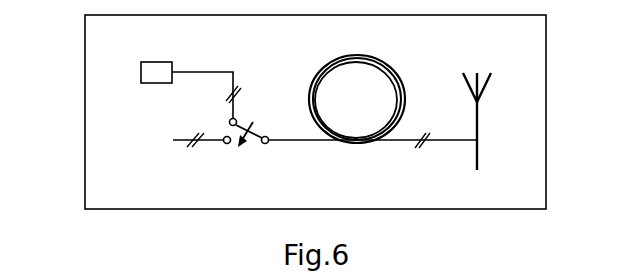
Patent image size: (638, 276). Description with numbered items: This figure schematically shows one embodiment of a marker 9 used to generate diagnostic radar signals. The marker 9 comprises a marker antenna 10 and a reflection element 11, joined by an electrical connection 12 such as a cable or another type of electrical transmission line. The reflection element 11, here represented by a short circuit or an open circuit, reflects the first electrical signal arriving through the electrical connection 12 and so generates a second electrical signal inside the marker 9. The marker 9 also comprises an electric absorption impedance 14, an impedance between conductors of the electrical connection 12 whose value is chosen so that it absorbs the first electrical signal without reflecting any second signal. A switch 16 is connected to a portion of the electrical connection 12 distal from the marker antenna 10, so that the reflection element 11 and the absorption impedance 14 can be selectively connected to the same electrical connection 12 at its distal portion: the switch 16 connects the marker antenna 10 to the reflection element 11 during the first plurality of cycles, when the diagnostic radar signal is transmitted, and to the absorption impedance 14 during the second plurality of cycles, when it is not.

The marker 9 is at (82, 175).
The marker antenna 10 is at (477, 153).
The reflection element 11 is at (147, 136).
The electrical connection 12 is at (348, 142).
The electric absorption impedance 14 is at (158, 62).
The switch 16 is at (260, 112).